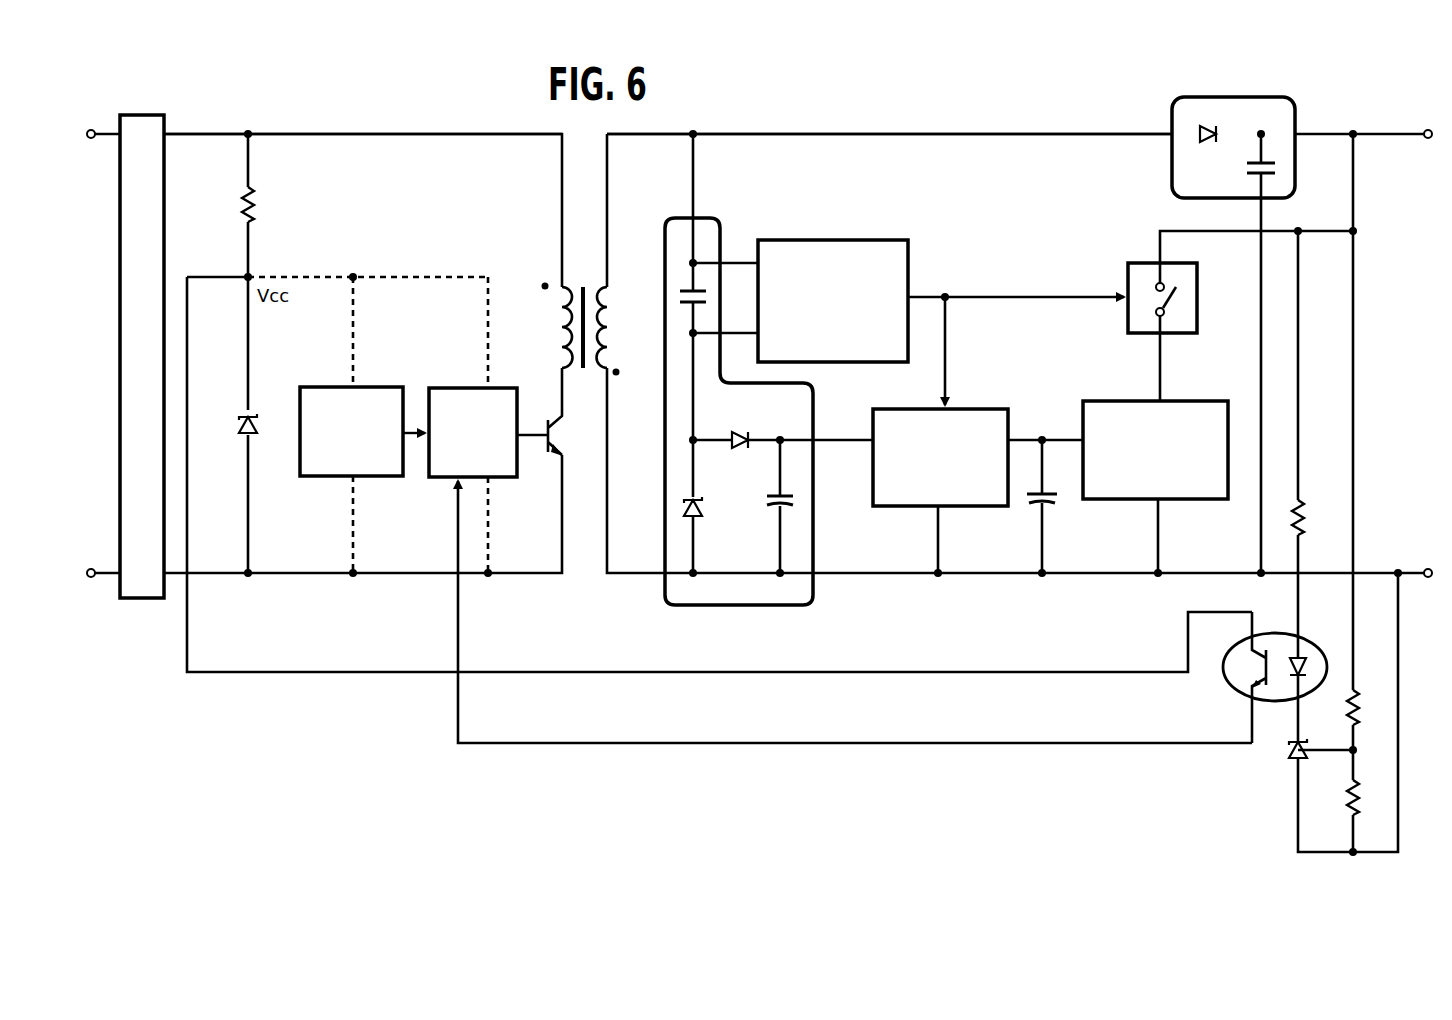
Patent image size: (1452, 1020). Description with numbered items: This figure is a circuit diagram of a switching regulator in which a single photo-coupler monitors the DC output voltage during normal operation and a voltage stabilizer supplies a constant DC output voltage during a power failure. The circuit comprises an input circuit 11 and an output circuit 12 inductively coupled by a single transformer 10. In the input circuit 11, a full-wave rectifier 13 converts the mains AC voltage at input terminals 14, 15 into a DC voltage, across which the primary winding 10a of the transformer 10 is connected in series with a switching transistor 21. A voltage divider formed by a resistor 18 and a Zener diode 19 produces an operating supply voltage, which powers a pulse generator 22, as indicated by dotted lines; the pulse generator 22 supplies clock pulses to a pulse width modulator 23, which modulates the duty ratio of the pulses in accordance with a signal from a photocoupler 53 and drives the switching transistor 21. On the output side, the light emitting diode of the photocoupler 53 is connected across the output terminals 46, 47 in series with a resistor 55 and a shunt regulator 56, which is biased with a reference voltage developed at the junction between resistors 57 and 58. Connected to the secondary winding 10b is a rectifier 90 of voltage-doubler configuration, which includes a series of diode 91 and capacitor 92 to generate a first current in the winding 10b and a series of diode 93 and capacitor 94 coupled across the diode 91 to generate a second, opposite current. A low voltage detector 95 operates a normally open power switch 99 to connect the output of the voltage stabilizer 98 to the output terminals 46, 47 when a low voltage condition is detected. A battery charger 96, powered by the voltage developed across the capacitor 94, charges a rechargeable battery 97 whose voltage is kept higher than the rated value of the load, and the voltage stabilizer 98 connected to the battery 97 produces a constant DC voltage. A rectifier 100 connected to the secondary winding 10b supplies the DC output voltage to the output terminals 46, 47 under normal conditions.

The transformer 10 is at (587, 311).
The primary winding 10a is at (565, 320).
The secondary winding 10b is at (604, 320).
The input circuit 11 is at (352, 116).
The output circuit 12 is at (852, 116).
The full-wave rectifier 13 is at (143, 115).
The input terminal 14 is at (91, 130).
The input terminal 15 is at (91, 569).
The resistor 18 is at (252, 205).
The Zener diode 19 is at (243, 423).
The switching transistor 21 is at (553, 452).
The pulse generator 22 is at (378, 387).
The pulse width modulator 23 is at (453, 388).
The output terminal 46 is at (1428, 130).
The output terminal 47 is at (1428, 569).
The photocoupler 53 is at (1276, 633).
The resistor 55 is at (1303, 505).
The shunt regulator 56 is at (1290, 762).
The resistor 57 is at (1358, 708).
The resistor 58 is at (1358, 808).
The rectifier 90 is at (722, 232).
The diode 91 is at (702, 505).
The capacitor 92 is at (678, 296).
The diode 93 is at (740, 432).
The capacitor 94 is at (770, 507).
The low voltage detector 95 is at (838, 240).
The battery charger 96 is at (896, 506).
The rechargeable battery 97 is at (1050, 505).
The voltage stabilizer 98 is at (1113, 401).
The power switch 99 is at (1128, 272).
The rectifier 100 is at (1226, 97).